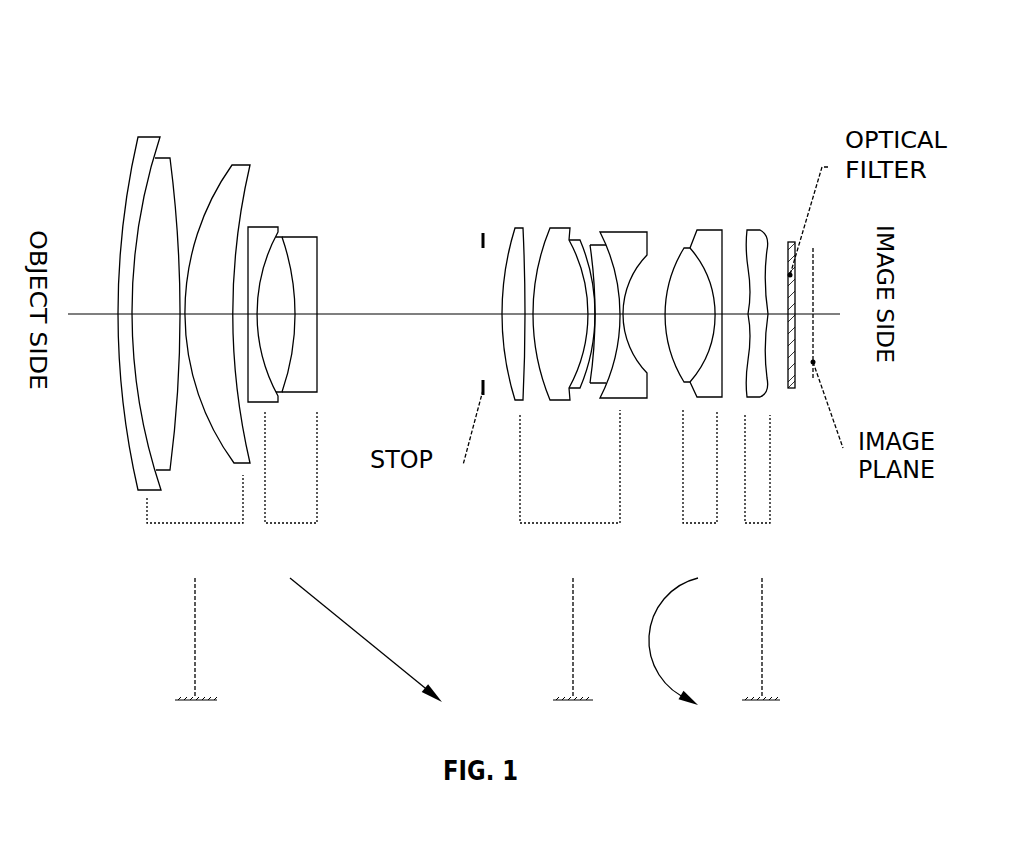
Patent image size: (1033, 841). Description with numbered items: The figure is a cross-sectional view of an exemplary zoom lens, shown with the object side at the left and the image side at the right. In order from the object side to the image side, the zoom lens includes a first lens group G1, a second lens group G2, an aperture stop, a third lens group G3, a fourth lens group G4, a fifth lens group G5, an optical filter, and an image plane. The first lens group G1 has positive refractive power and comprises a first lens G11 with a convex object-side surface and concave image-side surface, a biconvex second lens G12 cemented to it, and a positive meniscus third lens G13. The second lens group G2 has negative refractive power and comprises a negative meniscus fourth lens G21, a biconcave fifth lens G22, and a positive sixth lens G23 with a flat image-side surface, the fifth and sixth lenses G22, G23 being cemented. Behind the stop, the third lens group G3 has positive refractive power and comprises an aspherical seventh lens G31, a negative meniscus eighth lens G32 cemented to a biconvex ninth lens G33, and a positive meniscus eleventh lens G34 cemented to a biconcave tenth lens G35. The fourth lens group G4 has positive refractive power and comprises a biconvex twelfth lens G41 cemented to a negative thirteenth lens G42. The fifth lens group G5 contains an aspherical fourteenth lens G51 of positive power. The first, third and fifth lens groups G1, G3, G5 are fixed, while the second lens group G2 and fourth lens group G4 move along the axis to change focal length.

The first lens group G1 is at (142, 361).
The first lens G11 is at (147, 162).
The second lens G12 is at (162, 190).
The third lens G13 is at (232, 198).
The second lens group G2 is at (345, 419).
The fourth lens G21 is at (262, 242).
The fifth lens G22 is at (297, 247).
The sixth lens G23 is at (313, 253).
The third lens group G3 is at (530, 361).
The seventh lens G31 is at (515, 247).
The eighth lens G32 is at (556, 241).
The ninth lens G33 is at (569, 262).
The eleventh lens G34 is at (598, 267).
The tenth lens G35 is at (620, 250).
The fourth lens group G4 is at (738, 364).
The twelfth lens G41 is at (685, 263).
The thirteenth lens G42 is at (705, 247).
The fifth lens group G5 is at (814, 361).
The fourteenth lens G51 is at (755, 240).